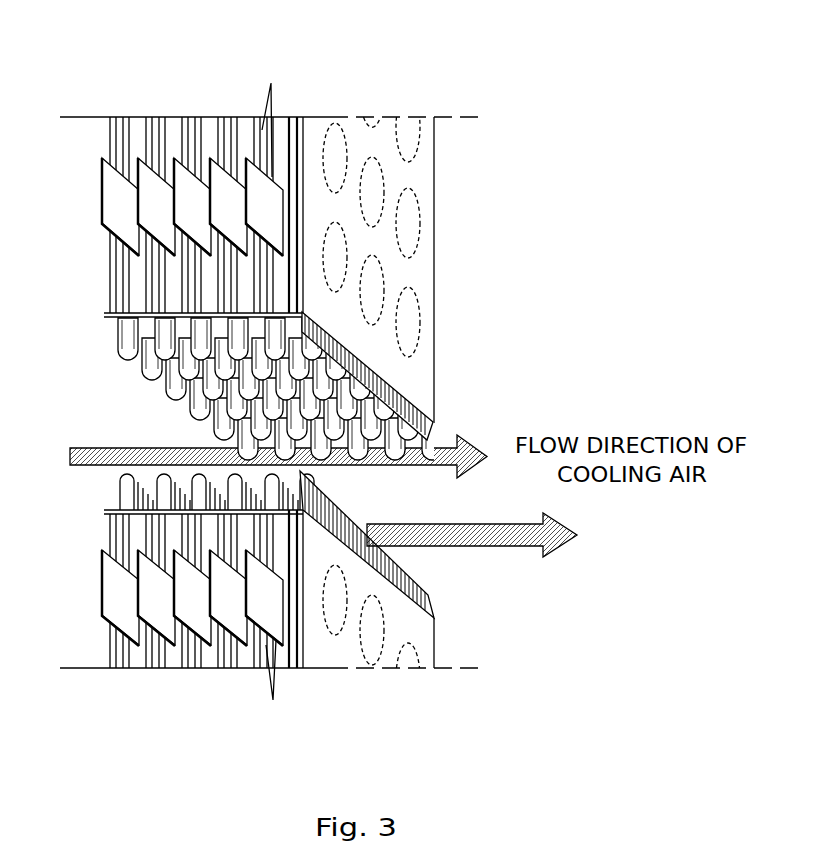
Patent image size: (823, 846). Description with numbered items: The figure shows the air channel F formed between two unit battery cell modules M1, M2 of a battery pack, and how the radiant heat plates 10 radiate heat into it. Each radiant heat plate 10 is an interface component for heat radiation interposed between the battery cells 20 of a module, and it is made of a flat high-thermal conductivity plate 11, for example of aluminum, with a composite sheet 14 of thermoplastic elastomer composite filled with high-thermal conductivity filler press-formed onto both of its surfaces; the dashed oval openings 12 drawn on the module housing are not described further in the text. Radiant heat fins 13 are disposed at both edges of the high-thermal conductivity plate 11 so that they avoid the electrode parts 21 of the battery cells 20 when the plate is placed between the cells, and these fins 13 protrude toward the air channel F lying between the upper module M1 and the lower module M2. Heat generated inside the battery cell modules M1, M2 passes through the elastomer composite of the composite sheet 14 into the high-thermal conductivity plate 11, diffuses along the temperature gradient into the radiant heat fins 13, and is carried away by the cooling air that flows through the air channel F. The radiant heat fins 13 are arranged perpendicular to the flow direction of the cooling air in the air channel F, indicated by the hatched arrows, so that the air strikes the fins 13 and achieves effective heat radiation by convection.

The radiant heat plate 10 is at (457, 153).
The high-thermal conductivity plate 11 is at (296, 128).
The air holes 12 is at (419, 244).
The radiant heat fin 13 is at (402, 418).
The composite sheet 14 is at (307, 128).
The battery cell 20 is at (173, 118).
The electrode part 21 is at (193, 187).
The air channel F is at (157, 441).
The unit battery cell module M1 is at (553, 312).
The unit battery cell module M2 is at (561, 612).